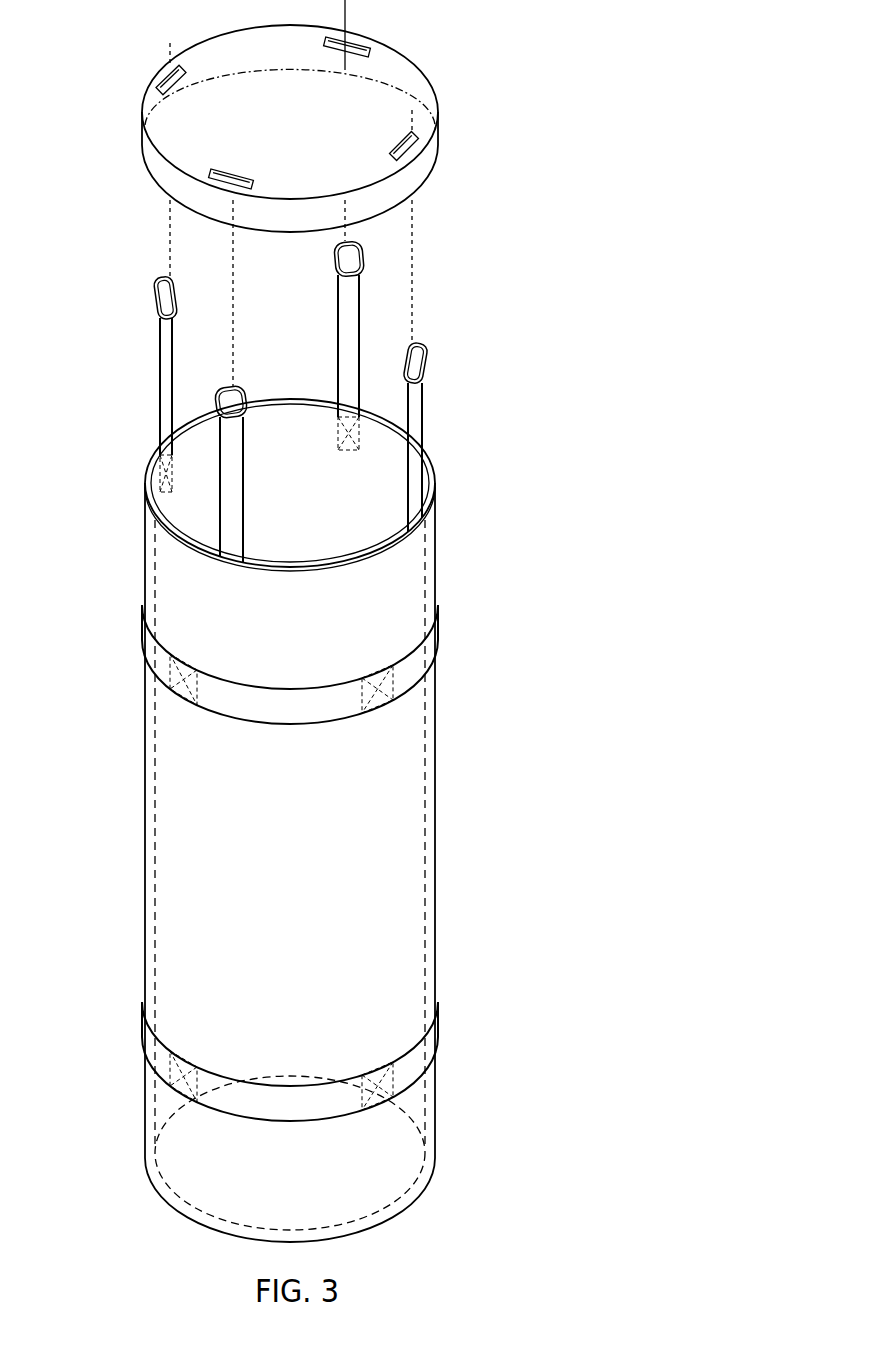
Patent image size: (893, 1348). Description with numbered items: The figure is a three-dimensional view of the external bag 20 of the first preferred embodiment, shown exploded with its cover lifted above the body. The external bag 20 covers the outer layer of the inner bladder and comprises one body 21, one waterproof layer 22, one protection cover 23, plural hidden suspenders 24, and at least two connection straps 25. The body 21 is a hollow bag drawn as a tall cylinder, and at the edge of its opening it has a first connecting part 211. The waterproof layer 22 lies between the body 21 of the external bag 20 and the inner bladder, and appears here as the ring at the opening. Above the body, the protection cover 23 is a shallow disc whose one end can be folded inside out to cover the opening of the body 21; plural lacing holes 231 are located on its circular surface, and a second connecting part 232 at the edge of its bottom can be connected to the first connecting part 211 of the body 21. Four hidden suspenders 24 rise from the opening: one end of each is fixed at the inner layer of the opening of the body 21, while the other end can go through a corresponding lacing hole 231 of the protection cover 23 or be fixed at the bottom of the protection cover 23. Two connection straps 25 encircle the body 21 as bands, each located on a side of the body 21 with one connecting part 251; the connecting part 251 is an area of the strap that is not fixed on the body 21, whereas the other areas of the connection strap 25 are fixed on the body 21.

The external bag 20 is at (612, 15).
The body 21 is at (140, 551).
The first connecting part 211 is at (147, 507).
The waterproof layer 22 is at (286, 402).
The protection cover 23 is at (133, 168).
The lacing holes 231 is at (162, 74).
The second connecting part 232 is at (397, 178).
The hidden suspenders 24 is at (150, 357).
The connection straps 25 is at (432, 661).
The connecting part 251 is at (306, 704).